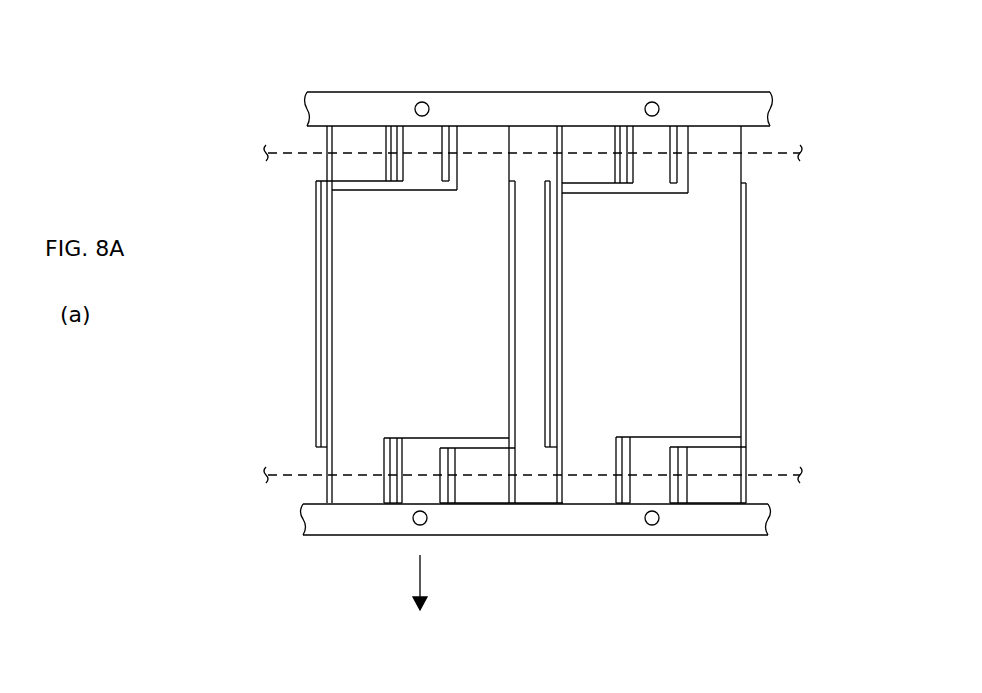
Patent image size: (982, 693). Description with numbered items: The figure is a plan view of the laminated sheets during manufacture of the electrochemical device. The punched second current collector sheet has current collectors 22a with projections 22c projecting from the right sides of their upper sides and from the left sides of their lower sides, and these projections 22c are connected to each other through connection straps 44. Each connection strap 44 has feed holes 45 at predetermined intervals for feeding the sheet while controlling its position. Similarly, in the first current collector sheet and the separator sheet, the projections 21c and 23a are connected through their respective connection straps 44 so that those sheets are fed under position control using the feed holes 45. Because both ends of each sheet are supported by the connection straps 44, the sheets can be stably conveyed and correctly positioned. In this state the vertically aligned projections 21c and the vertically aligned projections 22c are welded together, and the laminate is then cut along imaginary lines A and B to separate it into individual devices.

The projections 21c is at (355, 137).
The current collectors 22a is at (348, 315).
The projections 22c is at (483, 163).
The projections 23a is at (433, 133).
The connection straps 44 is at (363, 103).
The feed holes 45 is at (421, 101).
The imaginary line A is at (773, 150).
The imaginary line B is at (773, 468).